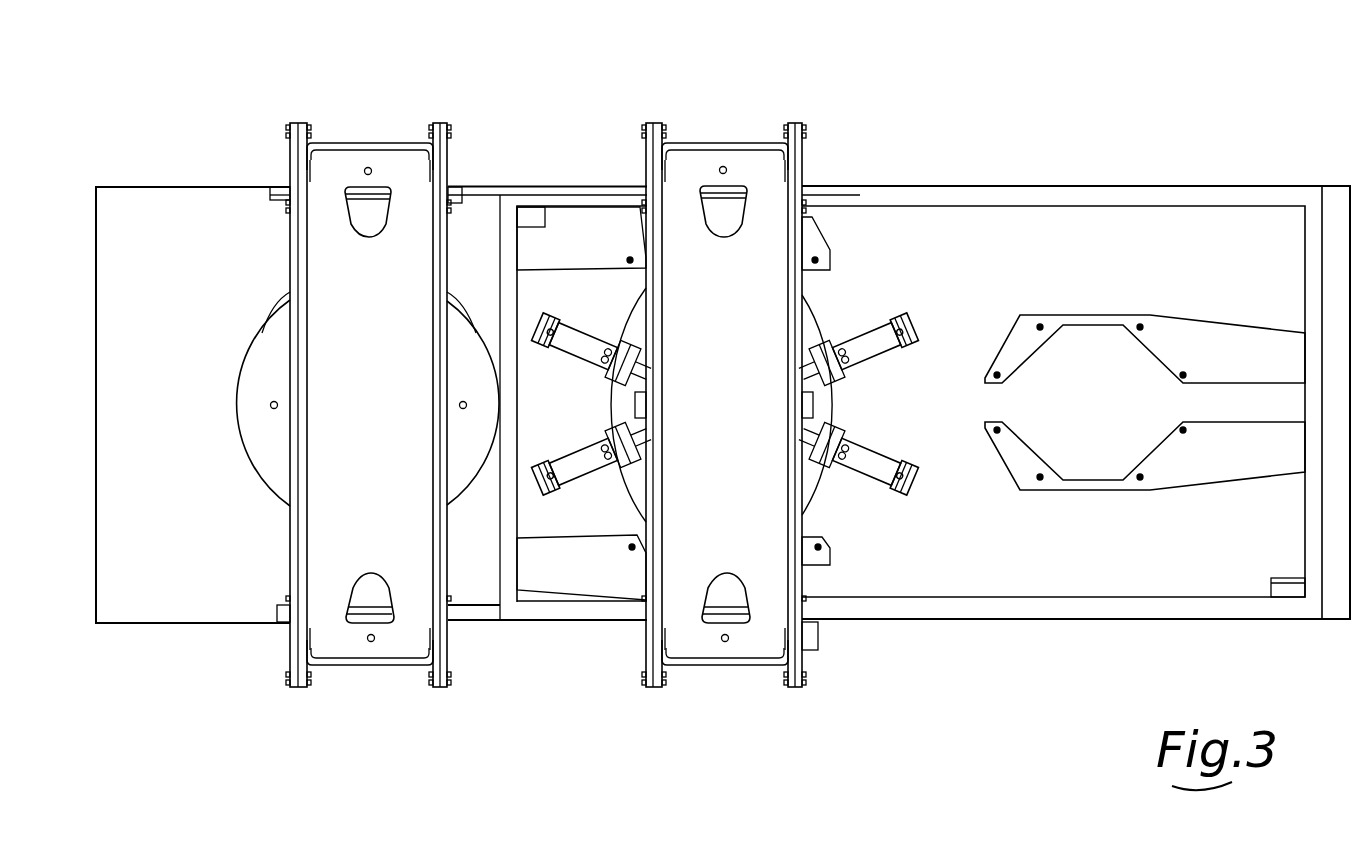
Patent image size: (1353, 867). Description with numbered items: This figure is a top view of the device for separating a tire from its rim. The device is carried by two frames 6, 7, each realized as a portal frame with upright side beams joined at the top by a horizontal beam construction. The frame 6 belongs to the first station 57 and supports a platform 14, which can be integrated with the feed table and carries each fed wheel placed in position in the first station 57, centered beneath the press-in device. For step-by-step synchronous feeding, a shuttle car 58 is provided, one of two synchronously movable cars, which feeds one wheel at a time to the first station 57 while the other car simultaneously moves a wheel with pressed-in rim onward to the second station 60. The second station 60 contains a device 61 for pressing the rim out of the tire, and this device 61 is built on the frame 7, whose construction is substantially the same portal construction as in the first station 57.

The frame 7 is at (424, 363).
The device for pressing the rim out of the tire 61 is at (468, 110).
The first station 57 is at (752, 354).
The frame 6 is at (797, 162).
The shuttle car 58 is at (1085, 313).
The second station 60 is at (285, 512).
The platform 14 is at (917, 572).